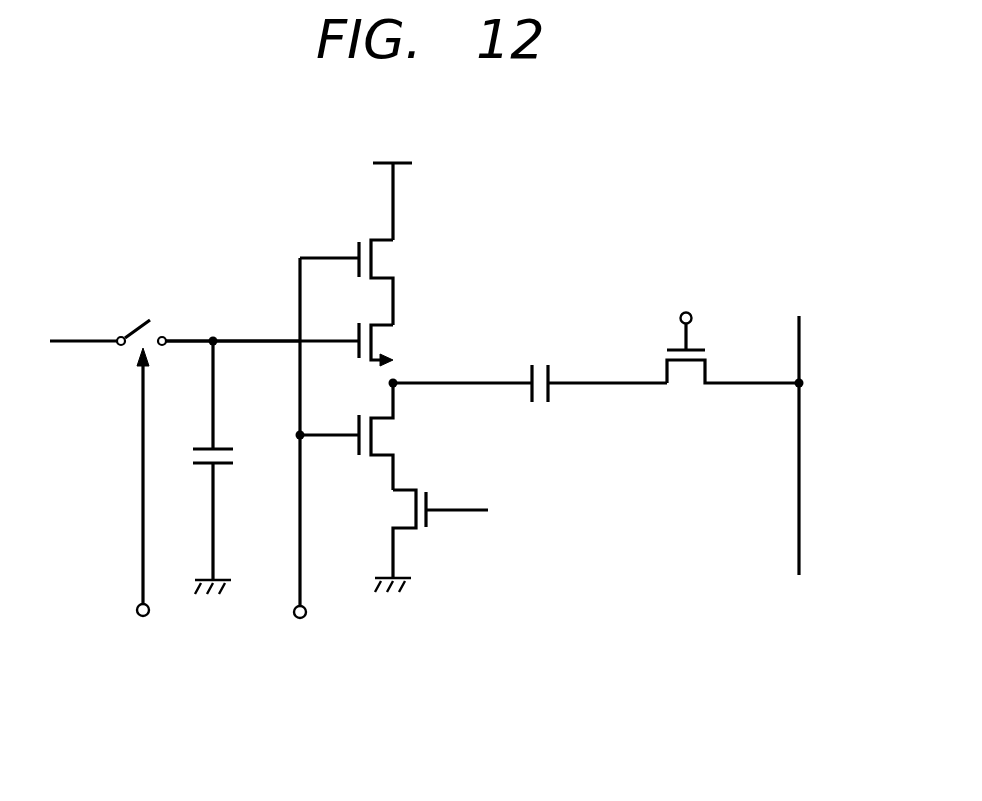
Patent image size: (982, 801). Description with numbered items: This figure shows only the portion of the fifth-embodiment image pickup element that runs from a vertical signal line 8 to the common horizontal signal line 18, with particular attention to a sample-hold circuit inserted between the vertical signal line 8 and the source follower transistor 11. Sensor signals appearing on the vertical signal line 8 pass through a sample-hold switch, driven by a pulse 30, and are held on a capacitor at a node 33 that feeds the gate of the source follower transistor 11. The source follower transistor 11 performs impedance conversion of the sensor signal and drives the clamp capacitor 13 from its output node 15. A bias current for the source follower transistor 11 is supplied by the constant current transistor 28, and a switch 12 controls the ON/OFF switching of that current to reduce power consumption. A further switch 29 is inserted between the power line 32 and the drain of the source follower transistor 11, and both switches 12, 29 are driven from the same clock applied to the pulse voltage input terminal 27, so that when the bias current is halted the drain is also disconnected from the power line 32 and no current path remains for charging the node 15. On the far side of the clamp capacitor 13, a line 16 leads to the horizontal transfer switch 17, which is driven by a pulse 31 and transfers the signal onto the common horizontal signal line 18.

The vertical signal line 8 is at (90, 344).
The source follower transistor 11 is at (384, 339).
The switch 12 is at (393, 436).
The clamp capacitor 13 is at (549, 395).
The node 15 is at (486, 381).
The line 16 is at (613, 381).
The horizontal transfer switch 17 is at (688, 392).
The common horizontal signal line 18 is at (801, 437).
The pulse voltage input terminal 27 is at (299, 619).
The constant current transistor 28 is at (398, 510).
The switch 29 is at (385, 259).
The pulse 30 is at (142, 617).
The pulse 31 is at (687, 311).
The power line 32 is at (399, 161).
The node 33 is at (249, 339).